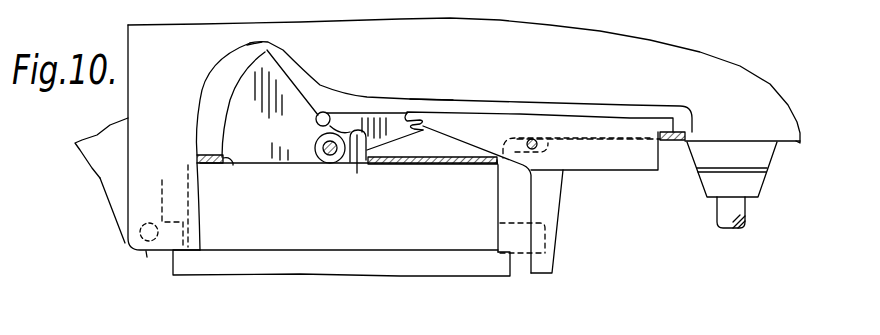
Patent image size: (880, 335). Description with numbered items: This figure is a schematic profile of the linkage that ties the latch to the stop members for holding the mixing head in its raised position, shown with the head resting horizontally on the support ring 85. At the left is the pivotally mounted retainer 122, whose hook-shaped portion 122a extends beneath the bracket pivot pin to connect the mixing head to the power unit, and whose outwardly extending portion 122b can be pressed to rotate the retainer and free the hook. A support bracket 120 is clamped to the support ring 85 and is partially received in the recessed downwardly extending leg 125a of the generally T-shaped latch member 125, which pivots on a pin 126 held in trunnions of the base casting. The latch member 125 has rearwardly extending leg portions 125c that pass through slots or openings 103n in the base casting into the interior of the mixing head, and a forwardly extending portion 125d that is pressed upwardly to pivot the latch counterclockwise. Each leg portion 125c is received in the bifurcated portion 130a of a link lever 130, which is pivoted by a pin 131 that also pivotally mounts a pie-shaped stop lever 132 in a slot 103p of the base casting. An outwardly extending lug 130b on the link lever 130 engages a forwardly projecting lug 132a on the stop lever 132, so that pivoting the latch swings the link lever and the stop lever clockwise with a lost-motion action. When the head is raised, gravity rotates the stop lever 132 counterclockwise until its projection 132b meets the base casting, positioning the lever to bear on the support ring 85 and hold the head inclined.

The support ring 85 is at (413, 237).
The slots or openings 103n is at (500, 167).
The slots 103p is at (233, 165).
The support bracket 120 is at (527, 293).
The retainer 122 is at (121, 137).
The hook-shaped portion 122a is at (147, 252).
The portion 122b is at (110, 185).
The latch member 125 is at (588, 162).
The leg 125a is at (553, 222).
The leg portions 125c is at (453, 109).
The forwardly extending portion 125d is at (655, 172).
The pin 126 is at (533, 138).
The link lever 130 is at (363, 110).
The bifurcated portion 130a is at (413, 112).
The outwardly extending lug 130b is at (320, 118).
The pin 131 is at (322, 162).
The stop lever 132 is at (275, 80).
The forwardly projecting lug 132a is at (357, 163).
The projection 132b is at (247, 45).